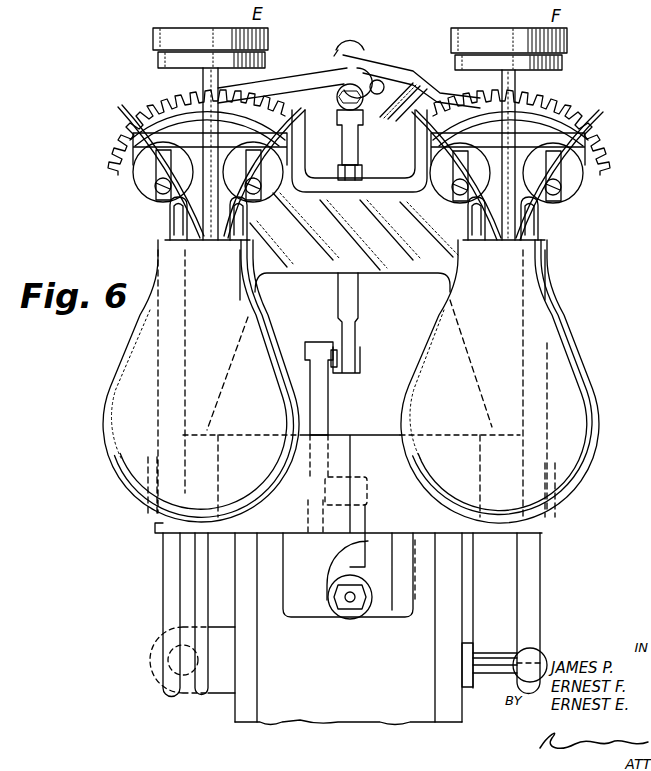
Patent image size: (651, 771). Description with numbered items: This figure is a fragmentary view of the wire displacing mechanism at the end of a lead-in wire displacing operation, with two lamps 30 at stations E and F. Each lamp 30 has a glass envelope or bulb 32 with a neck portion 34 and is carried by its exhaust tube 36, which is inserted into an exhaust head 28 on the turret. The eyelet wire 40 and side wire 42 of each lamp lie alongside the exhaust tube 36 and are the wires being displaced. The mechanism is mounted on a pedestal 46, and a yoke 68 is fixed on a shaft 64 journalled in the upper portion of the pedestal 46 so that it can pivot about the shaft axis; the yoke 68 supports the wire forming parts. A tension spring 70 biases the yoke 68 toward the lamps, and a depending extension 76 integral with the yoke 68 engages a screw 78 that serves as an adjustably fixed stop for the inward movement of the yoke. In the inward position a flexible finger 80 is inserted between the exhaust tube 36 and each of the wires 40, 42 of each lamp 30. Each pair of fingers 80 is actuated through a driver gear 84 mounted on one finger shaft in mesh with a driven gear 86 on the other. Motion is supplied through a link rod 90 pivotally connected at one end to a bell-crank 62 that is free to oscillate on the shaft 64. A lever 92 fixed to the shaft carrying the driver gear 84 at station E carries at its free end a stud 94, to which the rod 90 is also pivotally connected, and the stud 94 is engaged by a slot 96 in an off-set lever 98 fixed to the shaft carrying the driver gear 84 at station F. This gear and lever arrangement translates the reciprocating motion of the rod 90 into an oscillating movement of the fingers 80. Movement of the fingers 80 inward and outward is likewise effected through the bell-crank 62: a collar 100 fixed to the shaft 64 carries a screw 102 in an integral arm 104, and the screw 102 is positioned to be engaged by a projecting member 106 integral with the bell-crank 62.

The exhaust head 28 is at (153, 33).
The exhaust tube 36 is at (205, 80).
The side wire 42 is at (117, 107).
The driver gear 84 is at (110, 137).
The flexible finger 80 is at (160, 168).
The neck portion 34 is at (170, 223).
The lever 92 is at (308, 80).
The stud 94 is at (343, 43).
The slot 96 is at (377, 80).
The off-set lever 98 is at (390, 67).
The eyelet wire 40 is at (294, 113).
The driven gear 86 is at (293, 150).
The yoke 68 is at (305, 267).
The link rod 90 is at (350, 295).
The bell-crank 62 is at (323, 392).
The collar 100 is at (367, 434).
The projecting member 106 is at (363, 477).
The glass envelope or bulb 32 is at (104, 420).
The lamp 30 is at (114, 505).
The integral arm 104 is at (368, 542).
The screw 102 is at (350, 613).
The depending extension 76 is at (180, 592).
The screw 78 is at (163, 673).
The pedestal 46 is at (455, 590).
The tension spring 70 is at (540, 663).
The shaft 64 is at (573, 505).